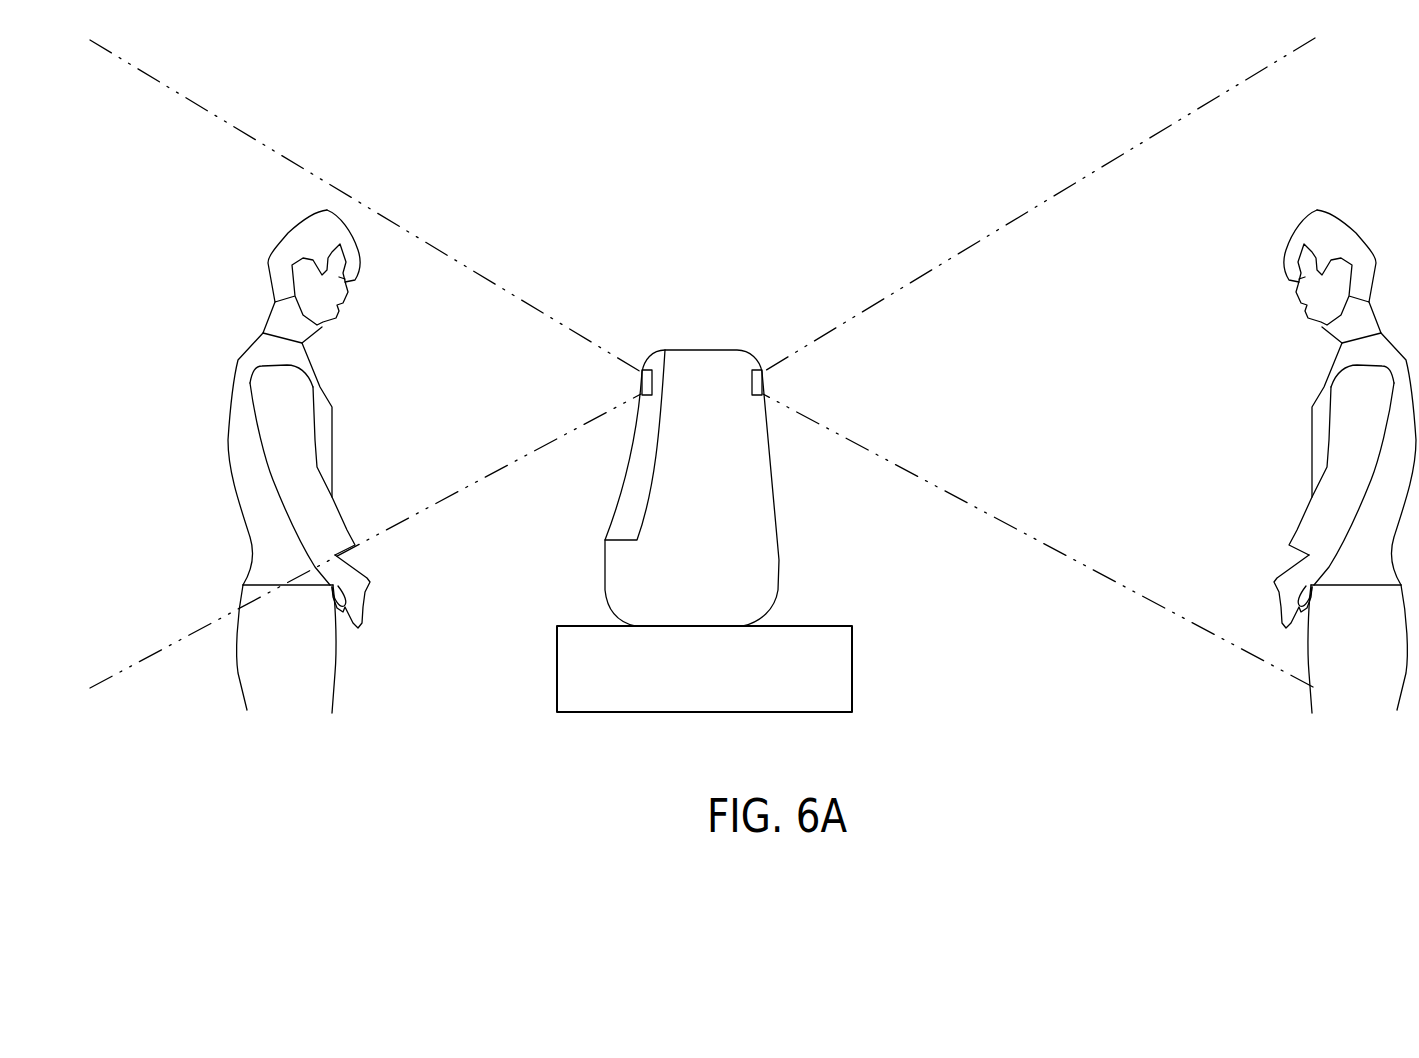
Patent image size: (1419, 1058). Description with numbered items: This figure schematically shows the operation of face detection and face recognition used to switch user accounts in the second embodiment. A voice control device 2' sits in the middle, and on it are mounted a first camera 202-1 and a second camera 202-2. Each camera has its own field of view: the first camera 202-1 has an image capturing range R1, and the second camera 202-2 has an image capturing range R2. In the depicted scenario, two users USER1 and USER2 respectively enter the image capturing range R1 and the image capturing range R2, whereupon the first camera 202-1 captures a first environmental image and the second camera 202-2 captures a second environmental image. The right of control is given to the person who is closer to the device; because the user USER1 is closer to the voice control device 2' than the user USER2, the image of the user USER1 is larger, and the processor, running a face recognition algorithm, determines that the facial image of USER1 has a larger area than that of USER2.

The voice control device 2' is at (704, 494).
The first camera 202-1 is at (641, 373).
The second camera 202-2 is at (763, 373).
The image capturing range R1 is at (462, 260).
The image capturing range R2 is at (928, 267).
The user USER1 is at (323, 210).
The user USER2 is at (1317, 210).